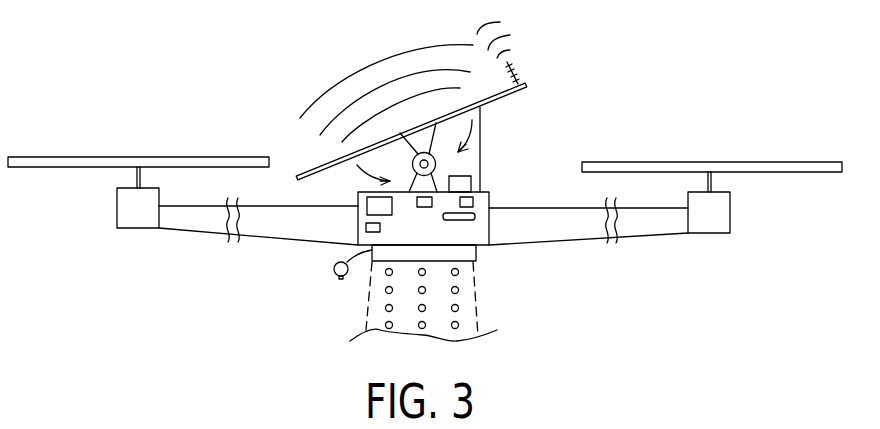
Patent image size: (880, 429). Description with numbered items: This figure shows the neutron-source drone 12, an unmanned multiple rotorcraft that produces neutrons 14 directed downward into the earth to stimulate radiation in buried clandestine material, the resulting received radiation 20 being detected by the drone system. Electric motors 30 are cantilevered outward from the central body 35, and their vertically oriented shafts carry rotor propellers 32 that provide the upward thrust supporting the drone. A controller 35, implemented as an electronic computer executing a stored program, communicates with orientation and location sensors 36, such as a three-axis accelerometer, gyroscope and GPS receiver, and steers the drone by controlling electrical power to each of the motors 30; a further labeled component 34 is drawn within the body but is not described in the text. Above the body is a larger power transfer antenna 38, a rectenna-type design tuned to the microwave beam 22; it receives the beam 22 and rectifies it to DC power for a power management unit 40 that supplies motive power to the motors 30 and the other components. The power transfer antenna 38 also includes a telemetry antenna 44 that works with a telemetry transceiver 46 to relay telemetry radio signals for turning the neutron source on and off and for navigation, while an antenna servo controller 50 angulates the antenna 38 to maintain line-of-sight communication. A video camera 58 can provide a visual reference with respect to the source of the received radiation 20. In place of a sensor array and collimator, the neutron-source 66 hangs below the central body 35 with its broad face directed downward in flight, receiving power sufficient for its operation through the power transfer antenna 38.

The neutron-source drone 12 is at (632, 325).
The neutrons 14 is at (386, 305).
The received radiation 20 is at (502, 33).
The microwave beam 22 is at (380, 62).
The electric motors 30 is at (117, 218).
The rotor propellers 32 is at (138, 157).
The controller 34 is at (367, 207).
The controller 35 is at (462, 185).
The orientation and location sensors 36 is at (423, 207).
The power transfer antenna 38 is at (496, 102).
The power management unit 40 is at (473, 200).
The telemetry antenna 44 is at (516, 78).
The telemetry transceiver 46 is at (366, 227).
The antenna servo controller 50 is at (475, 216).
The video camera 58 is at (335, 275).
The neutron-source 66 is at (477, 250).